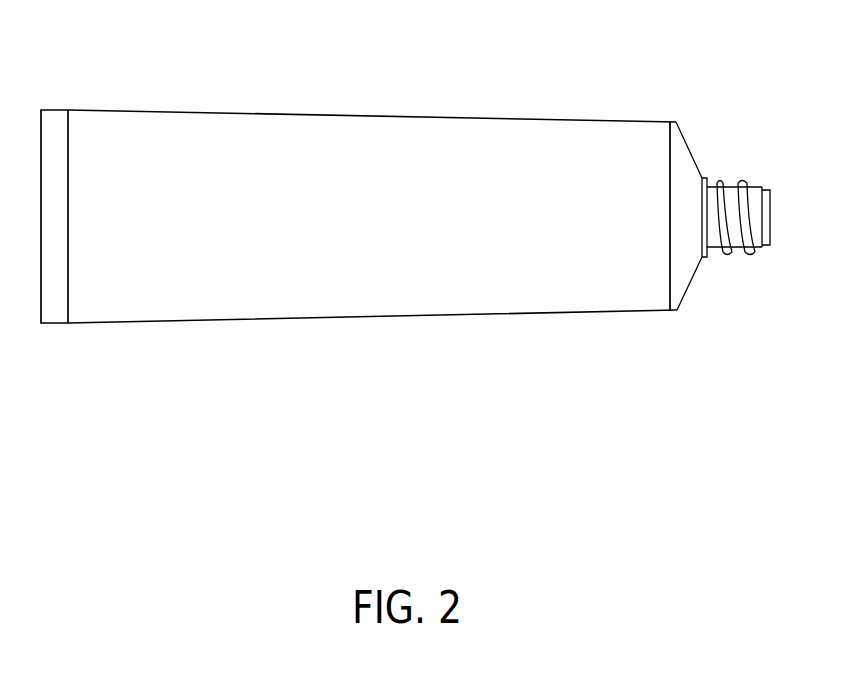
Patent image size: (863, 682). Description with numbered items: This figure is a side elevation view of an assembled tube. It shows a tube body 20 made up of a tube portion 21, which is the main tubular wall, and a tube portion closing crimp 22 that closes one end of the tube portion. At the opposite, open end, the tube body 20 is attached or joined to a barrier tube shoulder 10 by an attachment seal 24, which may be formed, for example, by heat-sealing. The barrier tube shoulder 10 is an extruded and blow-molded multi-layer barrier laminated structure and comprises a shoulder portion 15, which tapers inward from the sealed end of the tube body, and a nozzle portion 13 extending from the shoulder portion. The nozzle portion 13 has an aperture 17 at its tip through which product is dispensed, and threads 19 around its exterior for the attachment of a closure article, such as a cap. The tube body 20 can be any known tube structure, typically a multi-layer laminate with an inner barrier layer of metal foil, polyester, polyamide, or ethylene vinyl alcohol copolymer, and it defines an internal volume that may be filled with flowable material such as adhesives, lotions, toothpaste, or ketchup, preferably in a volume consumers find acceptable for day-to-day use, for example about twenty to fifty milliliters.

The barrier tube shoulder 10 is at (783, 173).
The nozzle portion 13 is at (712, 248).
The shoulder portion 15 is at (693, 160).
The aperture 17 is at (772, 215).
The threads 19 is at (748, 252).
The tube body 20 is at (329, 226).
The tube portion 21 is at (287, 130).
The tube portion closing crimp 22 is at (53, 109).
The attachment seal 24 is at (672, 140).